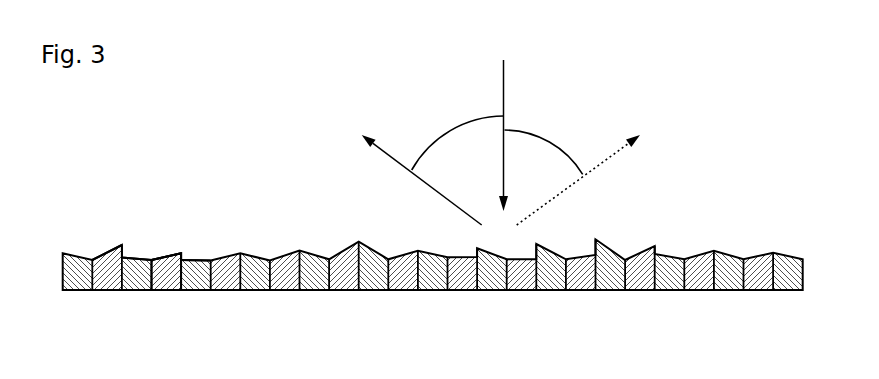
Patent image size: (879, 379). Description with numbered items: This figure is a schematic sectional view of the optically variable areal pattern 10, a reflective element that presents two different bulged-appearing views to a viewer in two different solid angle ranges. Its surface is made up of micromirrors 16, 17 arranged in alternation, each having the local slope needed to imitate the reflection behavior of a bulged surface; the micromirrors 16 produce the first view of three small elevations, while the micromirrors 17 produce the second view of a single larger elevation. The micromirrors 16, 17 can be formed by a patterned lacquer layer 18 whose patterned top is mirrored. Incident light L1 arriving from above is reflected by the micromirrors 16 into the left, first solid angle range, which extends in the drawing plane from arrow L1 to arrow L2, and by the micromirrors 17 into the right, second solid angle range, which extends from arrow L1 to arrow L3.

The optically variable areal pattern 10 is at (459, 302).
The micromirrors 16 is at (102, 255).
The micromirrors 17 is at (135, 257).
The patterned lacquer layer 18 is at (168, 278).
The incident light L1 is at (502, 80).
The arrow L2 is at (383, 157).
The arrow L3 is at (600, 157).